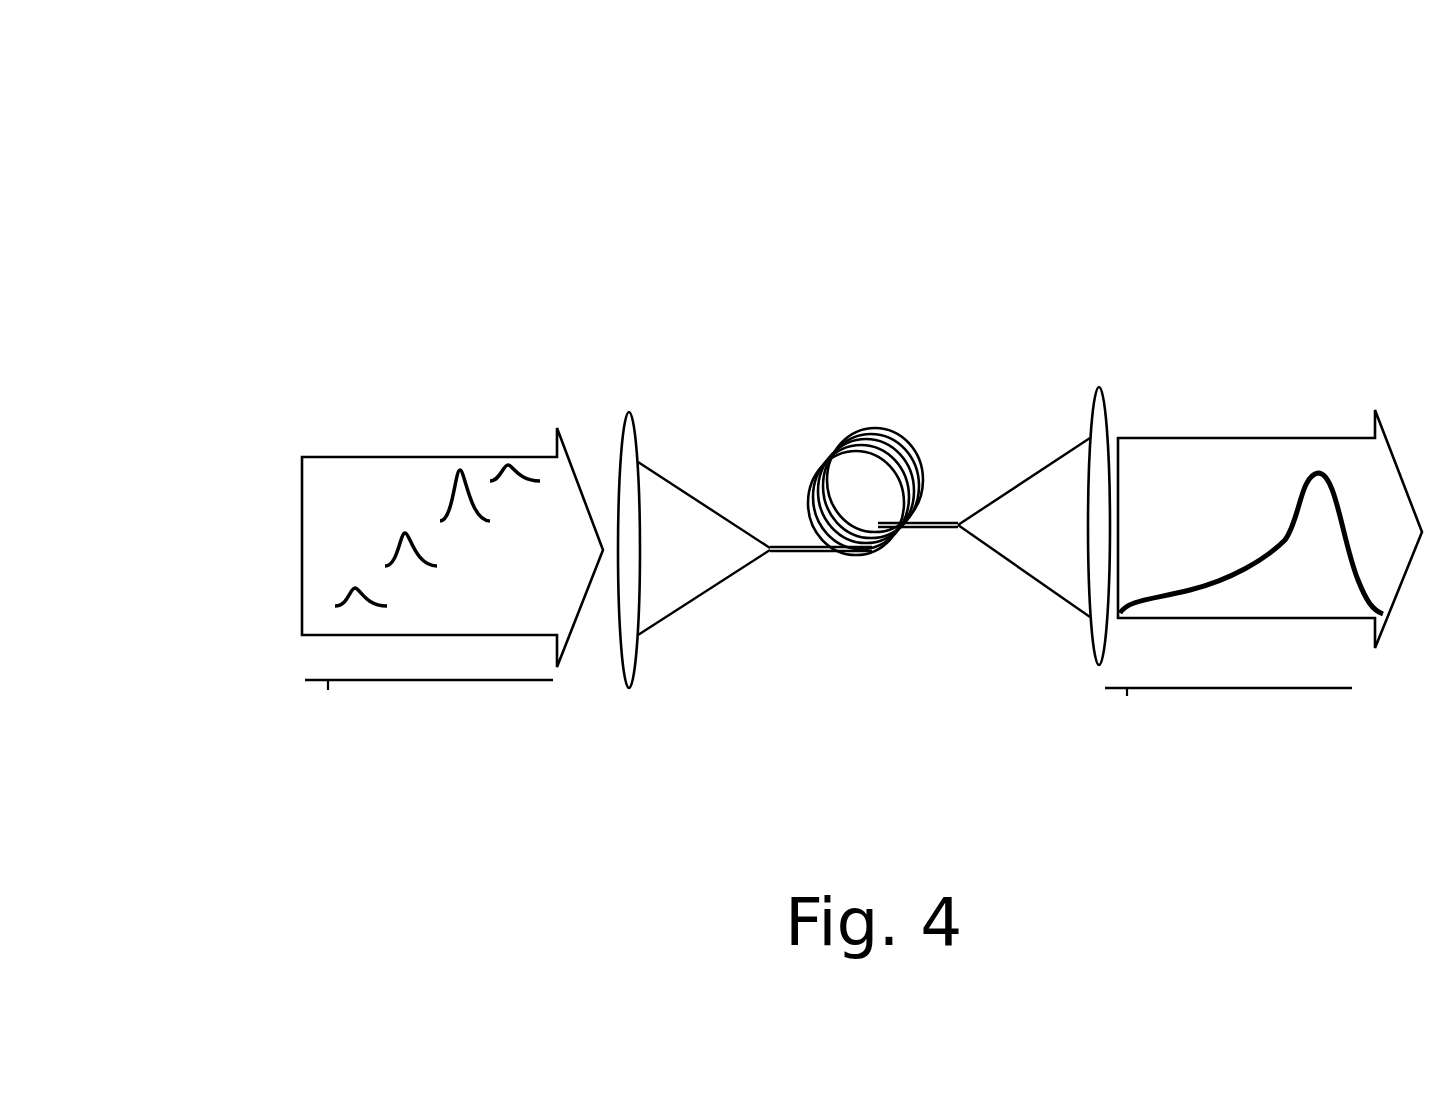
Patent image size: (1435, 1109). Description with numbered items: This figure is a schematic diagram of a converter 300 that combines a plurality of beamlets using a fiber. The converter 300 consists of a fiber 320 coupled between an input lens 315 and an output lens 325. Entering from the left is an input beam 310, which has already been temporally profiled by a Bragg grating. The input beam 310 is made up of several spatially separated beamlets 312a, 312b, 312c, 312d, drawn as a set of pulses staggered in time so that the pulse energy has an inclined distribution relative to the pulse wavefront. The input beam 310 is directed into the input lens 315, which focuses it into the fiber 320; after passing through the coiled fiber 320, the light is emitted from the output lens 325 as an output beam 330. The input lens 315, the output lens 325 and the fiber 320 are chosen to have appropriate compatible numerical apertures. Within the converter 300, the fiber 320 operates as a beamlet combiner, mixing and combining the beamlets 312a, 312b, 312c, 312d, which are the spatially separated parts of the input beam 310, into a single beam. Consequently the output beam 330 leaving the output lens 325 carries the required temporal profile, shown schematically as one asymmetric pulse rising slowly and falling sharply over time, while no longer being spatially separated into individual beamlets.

The converter 300 is at (1185, 185).
The input beam 310 is at (378, 453).
The beamlet 312a is at (500, 462).
The beamlet 312b is at (440, 488).
The beamlet 312c is at (390, 540).
The beamlet 312d is at (230, 600).
The input lens 315 is at (614, 425).
The fiber 320 is at (866, 425).
The output lens 325 is at (1110, 407).
The output beam 330 is at (1233, 423).